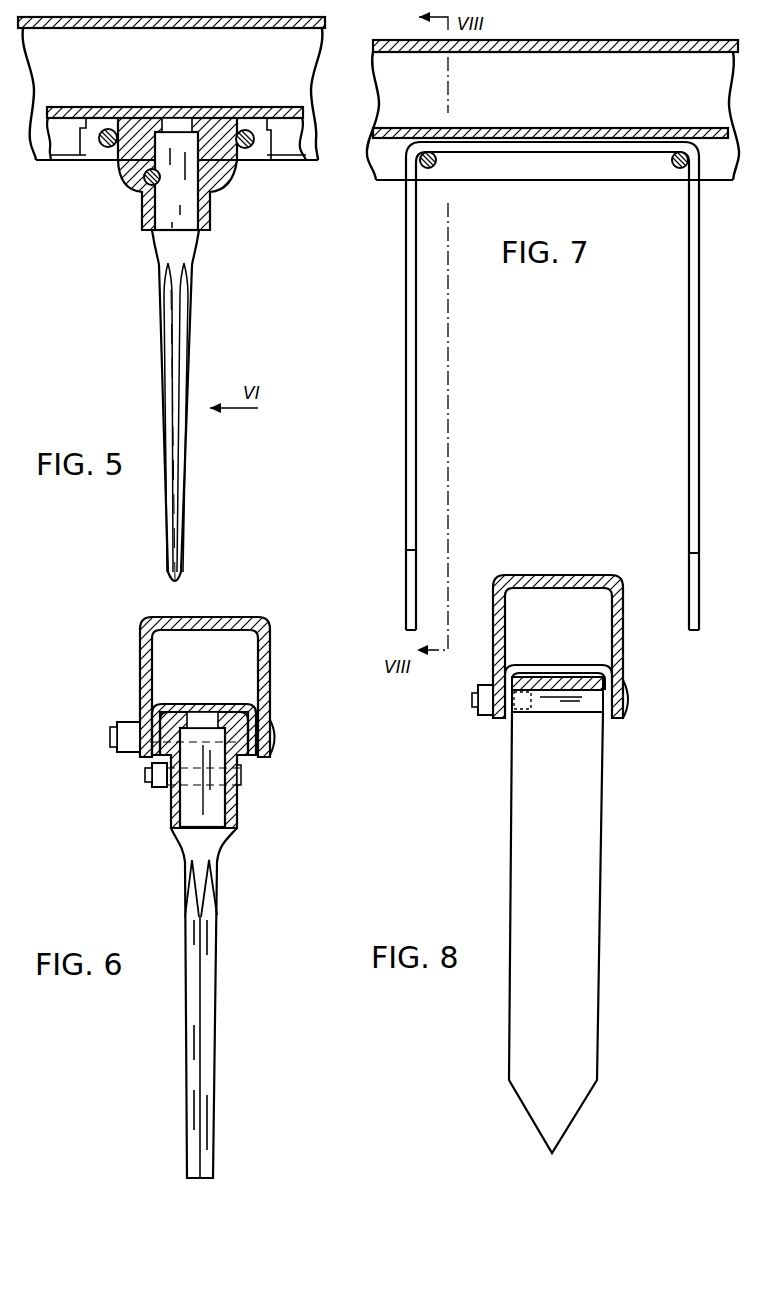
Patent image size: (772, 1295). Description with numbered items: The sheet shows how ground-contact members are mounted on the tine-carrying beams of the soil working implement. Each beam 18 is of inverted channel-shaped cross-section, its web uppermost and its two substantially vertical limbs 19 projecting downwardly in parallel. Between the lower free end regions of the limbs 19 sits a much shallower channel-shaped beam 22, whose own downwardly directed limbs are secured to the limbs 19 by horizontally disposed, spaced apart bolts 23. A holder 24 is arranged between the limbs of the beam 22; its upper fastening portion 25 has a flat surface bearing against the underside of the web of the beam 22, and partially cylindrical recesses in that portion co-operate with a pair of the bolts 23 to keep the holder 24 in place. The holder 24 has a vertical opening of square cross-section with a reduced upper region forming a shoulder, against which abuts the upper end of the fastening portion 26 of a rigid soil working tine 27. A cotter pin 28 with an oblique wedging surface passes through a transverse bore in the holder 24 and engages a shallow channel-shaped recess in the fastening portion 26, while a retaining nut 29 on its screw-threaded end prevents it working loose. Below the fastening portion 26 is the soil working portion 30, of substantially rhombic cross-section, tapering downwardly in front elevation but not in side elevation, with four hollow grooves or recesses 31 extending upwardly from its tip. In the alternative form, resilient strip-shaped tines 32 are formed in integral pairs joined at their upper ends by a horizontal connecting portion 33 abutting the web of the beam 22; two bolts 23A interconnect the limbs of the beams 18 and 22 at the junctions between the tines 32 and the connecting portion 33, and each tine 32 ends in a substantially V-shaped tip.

In FIG. 5, the beam 18 is at (67, 162).
In FIG. 6, the beam 18 is at (233, 615).
In FIG. 7, the beam 18 is at (718, 186).
In FIG. 8, the beam 18 is at (626, 651).
In FIG. 5, the limbs 19 is at (322, 162).
In FIG. 6, the limbs 19 is at (266, 643).
In FIG. 7, the limbs 19 is at (373, 77).
In FIG. 8, the limbs 19 is at (577, 576).
In FIG. 5, the beam 22 is at (140, 109).
In FIG. 6, the beam 22 is at (218, 703).
In FIG. 7, the beam 22 is at (613, 113).
In FIG. 8, the beam 22 is at (555, 670).
In FIG. 5, the bolts 23 is at (108, 158).
In FIG. 6, the bolts 23 is at (117, 736).
In FIG. 7, the bolts 23A is at (437, 161).
In FIG. 8, the bolts 23A is at (551, 705).
In FIG. 5, the holder 24 is at (216, 201).
In FIG. 6, the holder 24 is at (204, 770).
In FIG. 5, the fastening portion 25 is at (84, 134).
In FIG. 5, the fastening portion 26 is at (168, 231).
In FIG. 6, the fastening portion 26 is at (215, 817).
In FIG. 5, the soil working tine 27 is at (200, 327).
In FIG. 6, the soil working tine 27 is at (221, 916).
In FIG. 5, the cotter pin 28 is at (145, 185).
In FIG. 6, the cotter pin 28 is at (151, 776).
In FIG. 6, the retaining nut 29 is at (167, 792).
In FIG. 5, the soil working portion 30 is at (178, 508).
In FIG. 6, the soil working portion 30 is at (186, 934).
In FIG. 6, the grooves or recesses 31 is at (190, 1073).
In FIG. 7, the strip-shaped tines 32 is at (405, 466).
In FIG. 8, the strip-shaped tines 32 is at (506, 840).
In FIG. 7, the connecting portion 33 is at (533, 150).
In FIG. 8, the connecting portion 33 is at (582, 679).